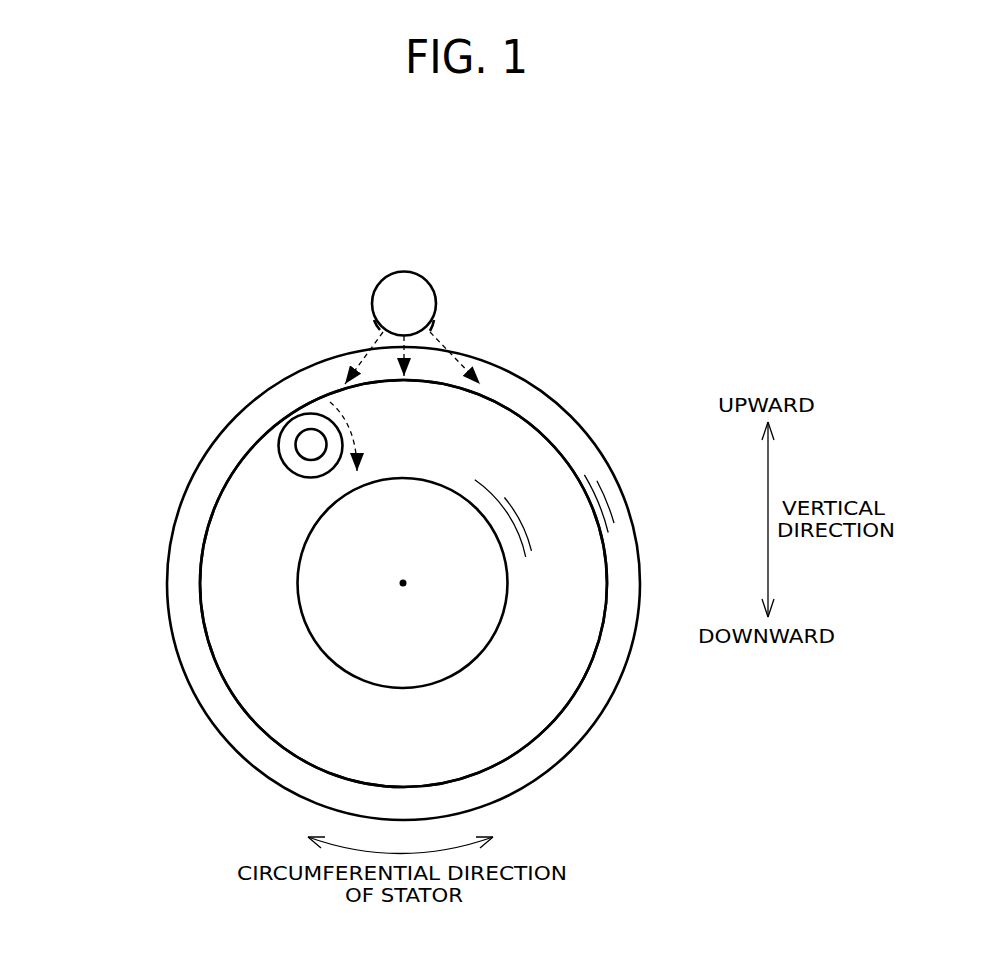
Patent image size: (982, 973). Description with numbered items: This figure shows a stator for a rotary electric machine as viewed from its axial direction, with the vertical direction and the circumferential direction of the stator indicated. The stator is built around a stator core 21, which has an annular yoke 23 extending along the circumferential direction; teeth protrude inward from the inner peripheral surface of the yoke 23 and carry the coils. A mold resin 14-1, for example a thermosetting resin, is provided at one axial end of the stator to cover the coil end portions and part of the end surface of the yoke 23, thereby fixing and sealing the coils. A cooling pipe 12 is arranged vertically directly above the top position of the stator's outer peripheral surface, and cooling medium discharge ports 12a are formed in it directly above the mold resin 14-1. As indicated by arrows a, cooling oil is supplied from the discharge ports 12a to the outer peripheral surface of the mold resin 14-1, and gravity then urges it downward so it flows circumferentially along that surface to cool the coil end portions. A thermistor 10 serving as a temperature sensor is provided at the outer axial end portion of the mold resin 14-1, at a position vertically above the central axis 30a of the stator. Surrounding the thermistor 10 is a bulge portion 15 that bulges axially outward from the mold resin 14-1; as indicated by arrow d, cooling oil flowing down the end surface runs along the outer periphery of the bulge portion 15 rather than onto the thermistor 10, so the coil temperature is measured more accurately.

The thermistor 10 is at (310, 442).
The cooling pipe 12 is at (427, 281).
The cooling medium discharge ports 12a is at (381, 330).
The arrows a is at (363, 352).
The mold resin 14-1 is at (272, 705).
The bulge portion 15 is at (287, 422).
The stator core 21 is at (171, 632).
The yoke 23 is at (208, 705).
The central axis 30a is at (403, 583).
The arrow d is at (360, 442).